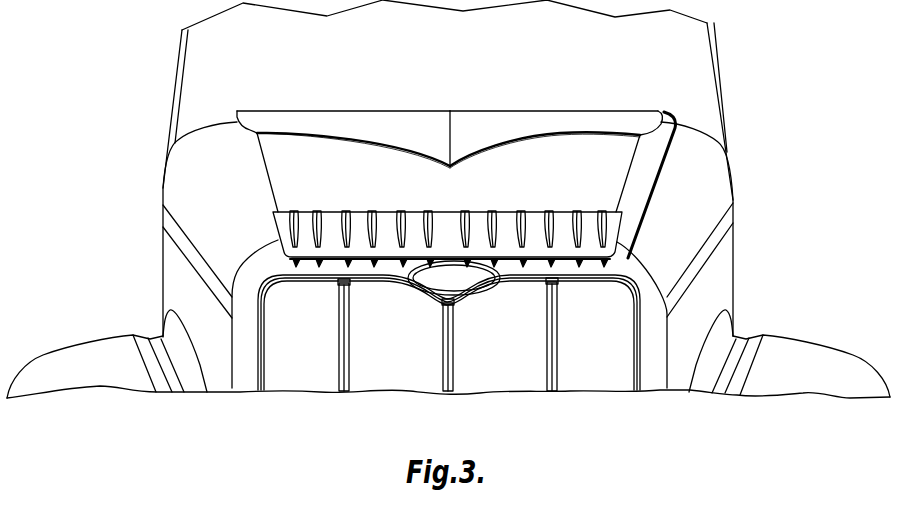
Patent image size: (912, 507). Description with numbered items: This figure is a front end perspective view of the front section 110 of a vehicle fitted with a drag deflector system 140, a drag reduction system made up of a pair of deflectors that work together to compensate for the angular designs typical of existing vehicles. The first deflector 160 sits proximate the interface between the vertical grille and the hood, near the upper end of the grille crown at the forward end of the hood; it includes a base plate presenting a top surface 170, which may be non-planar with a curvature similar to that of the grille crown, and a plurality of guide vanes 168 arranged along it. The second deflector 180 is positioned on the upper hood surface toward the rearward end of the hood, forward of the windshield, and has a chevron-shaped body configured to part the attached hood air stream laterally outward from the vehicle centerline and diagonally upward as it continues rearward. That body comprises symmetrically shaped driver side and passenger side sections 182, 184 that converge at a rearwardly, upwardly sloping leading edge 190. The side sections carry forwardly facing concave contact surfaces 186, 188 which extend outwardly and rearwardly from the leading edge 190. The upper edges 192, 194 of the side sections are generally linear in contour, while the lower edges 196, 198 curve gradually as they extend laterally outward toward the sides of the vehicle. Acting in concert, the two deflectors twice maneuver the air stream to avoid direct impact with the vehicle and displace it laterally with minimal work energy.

The front section 110 is at (730, 178).
The drag deflector system 140 is at (651, 190).
The first deflector 160 is at (265, 230).
The guide vanes 168 is at (604, 209).
The top surface 170 is at (445, 220).
The second deflector 180 is at (430, 125).
The driver side section 182 is at (246, 130).
The passenger side section 184 is at (636, 113).
The contact surface 186 is at (405, 134).
The contact surface 188 is at (511, 134).
The leading edge 190 is at (450, 125).
The upper edge 192 is at (356, 109).
The upper edge 194 is at (540, 110).
The lower edge 196 is at (377, 141).
The lower edge 198 is at (518, 143).